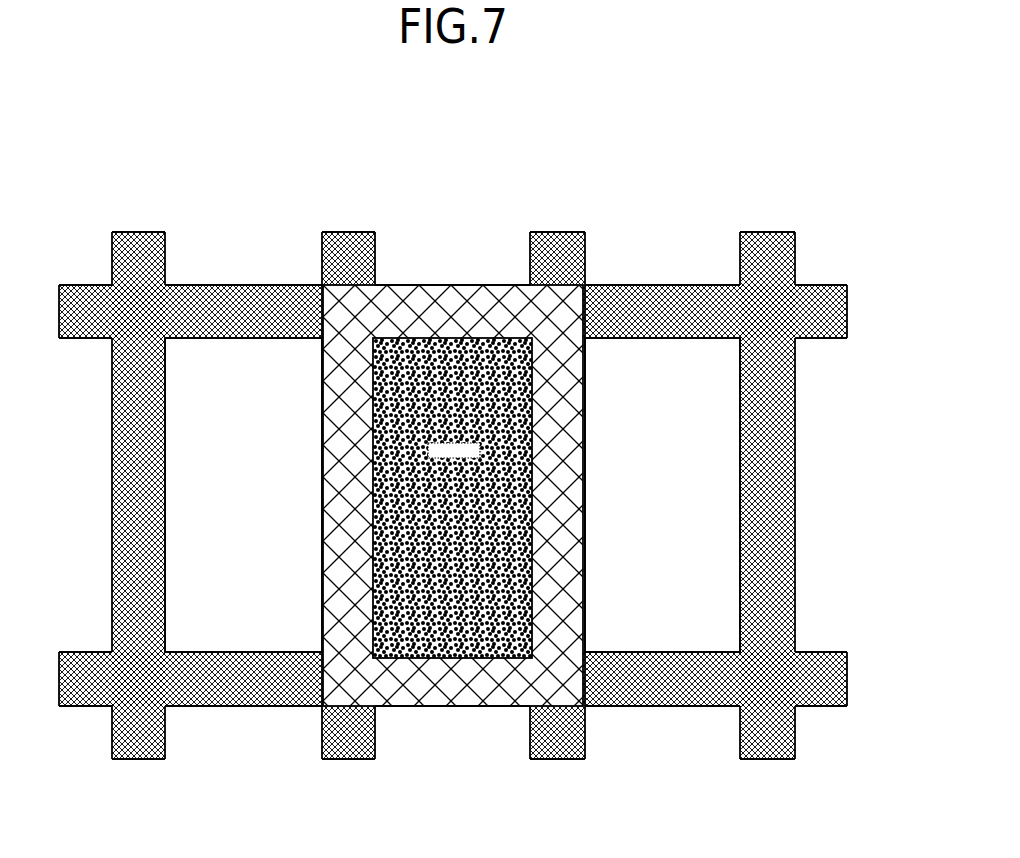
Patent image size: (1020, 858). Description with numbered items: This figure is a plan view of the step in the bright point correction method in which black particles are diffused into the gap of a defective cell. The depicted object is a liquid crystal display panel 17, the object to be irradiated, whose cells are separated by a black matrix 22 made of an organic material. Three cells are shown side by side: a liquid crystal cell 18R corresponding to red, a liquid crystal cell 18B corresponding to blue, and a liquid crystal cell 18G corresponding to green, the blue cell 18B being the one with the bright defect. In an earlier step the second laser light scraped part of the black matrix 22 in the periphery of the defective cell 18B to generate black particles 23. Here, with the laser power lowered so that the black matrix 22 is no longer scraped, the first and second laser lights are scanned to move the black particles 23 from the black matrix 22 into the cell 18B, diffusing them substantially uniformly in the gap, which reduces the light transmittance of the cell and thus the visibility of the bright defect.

The liquid crystal display panel 17 is at (701, 229).
The black matrix 22 is at (345, 483).
The black particles 23 is at (533, 537).
The liquid crystal cell corresponding to red 18R is at (240, 613).
The liquid crystal cell corresponding to green 18G is at (675, 613).
The liquid crystal cell corresponding to blue 18B is at (455, 600).